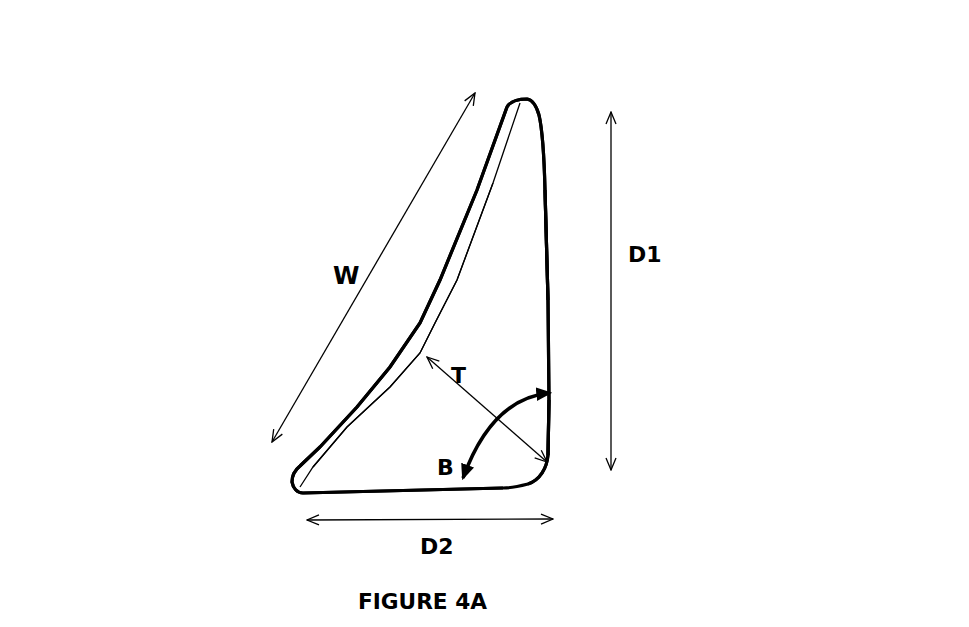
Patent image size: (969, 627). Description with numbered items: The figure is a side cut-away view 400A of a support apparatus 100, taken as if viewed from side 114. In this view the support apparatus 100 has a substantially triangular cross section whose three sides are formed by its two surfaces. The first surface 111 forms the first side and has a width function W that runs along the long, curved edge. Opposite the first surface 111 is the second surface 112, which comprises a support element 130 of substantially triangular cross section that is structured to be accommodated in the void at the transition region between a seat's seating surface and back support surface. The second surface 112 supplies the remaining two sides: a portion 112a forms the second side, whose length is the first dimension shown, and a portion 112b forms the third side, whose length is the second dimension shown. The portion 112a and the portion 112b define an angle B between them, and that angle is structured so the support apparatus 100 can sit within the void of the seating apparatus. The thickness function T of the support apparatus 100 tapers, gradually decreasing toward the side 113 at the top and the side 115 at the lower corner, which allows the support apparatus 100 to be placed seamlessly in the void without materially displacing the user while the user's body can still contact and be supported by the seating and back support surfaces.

The side cut-away view 400A is at (35, 138).
The support apparatus 100 is at (487, 260).
The first surface 111 is at (418, 322).
The second surface 112 is at (547, 194).
The portion of the second surface 112a is at (549, 266).
The portion of the second surface 112b is at (340, 493).
The side 113 is at (518, 102).
The side 114 is at (425, 410).
The side 115 is at (295, 490).
The support element 130 is at (550, 428).